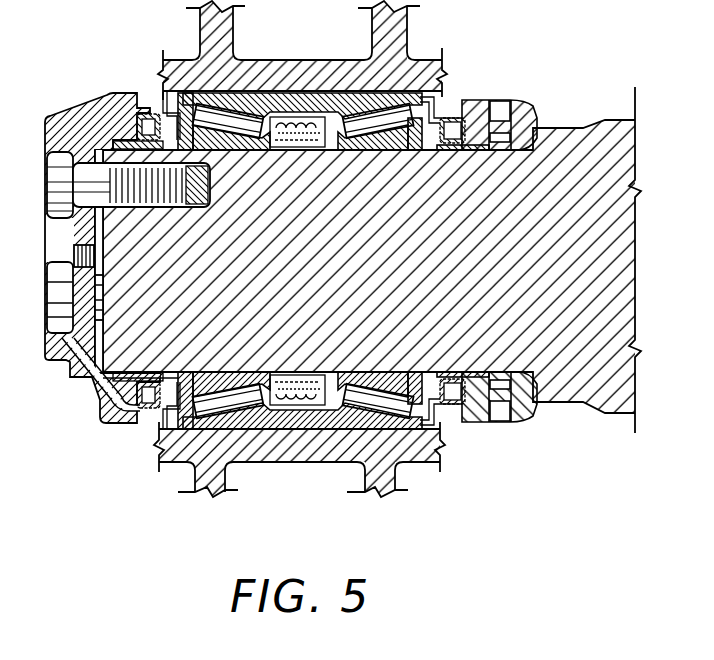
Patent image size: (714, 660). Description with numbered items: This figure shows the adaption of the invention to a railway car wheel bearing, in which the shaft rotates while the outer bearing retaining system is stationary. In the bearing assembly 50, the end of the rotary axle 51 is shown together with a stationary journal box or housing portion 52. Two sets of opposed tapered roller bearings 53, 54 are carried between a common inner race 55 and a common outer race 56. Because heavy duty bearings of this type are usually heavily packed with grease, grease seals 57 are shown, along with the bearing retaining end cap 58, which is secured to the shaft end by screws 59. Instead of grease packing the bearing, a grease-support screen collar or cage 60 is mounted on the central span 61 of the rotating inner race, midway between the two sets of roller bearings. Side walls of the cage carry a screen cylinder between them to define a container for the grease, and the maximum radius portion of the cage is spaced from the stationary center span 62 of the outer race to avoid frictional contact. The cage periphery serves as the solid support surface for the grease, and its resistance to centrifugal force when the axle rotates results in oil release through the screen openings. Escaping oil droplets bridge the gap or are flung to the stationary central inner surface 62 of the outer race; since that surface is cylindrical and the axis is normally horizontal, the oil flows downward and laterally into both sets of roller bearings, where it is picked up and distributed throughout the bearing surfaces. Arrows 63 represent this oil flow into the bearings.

The bearing assembly 50 is at (351, 251).
The rotary axle 51 is at (637, 168).
The journal box or housing portion 52 is at (200, 30).
The roller bearings 53 is at (432, 106).
The roller bearings 54 is at (157, 95).
The common inner race 55 is at (378, 367).
The common outer race 56 is at (347, 92).
The grease seals 57 is at (452, 153).
The bearing retaining end cap 58 is at (90, 108).
The screws 59 is at (47, 183).
The grease-support screen collar or cage 60 is at (302, 135).
The central span of the inner race 61 is at (278, 148).
The stationary center span of the outer race 62 is at (253, 108).
The arrows 63 is at (308, 110).